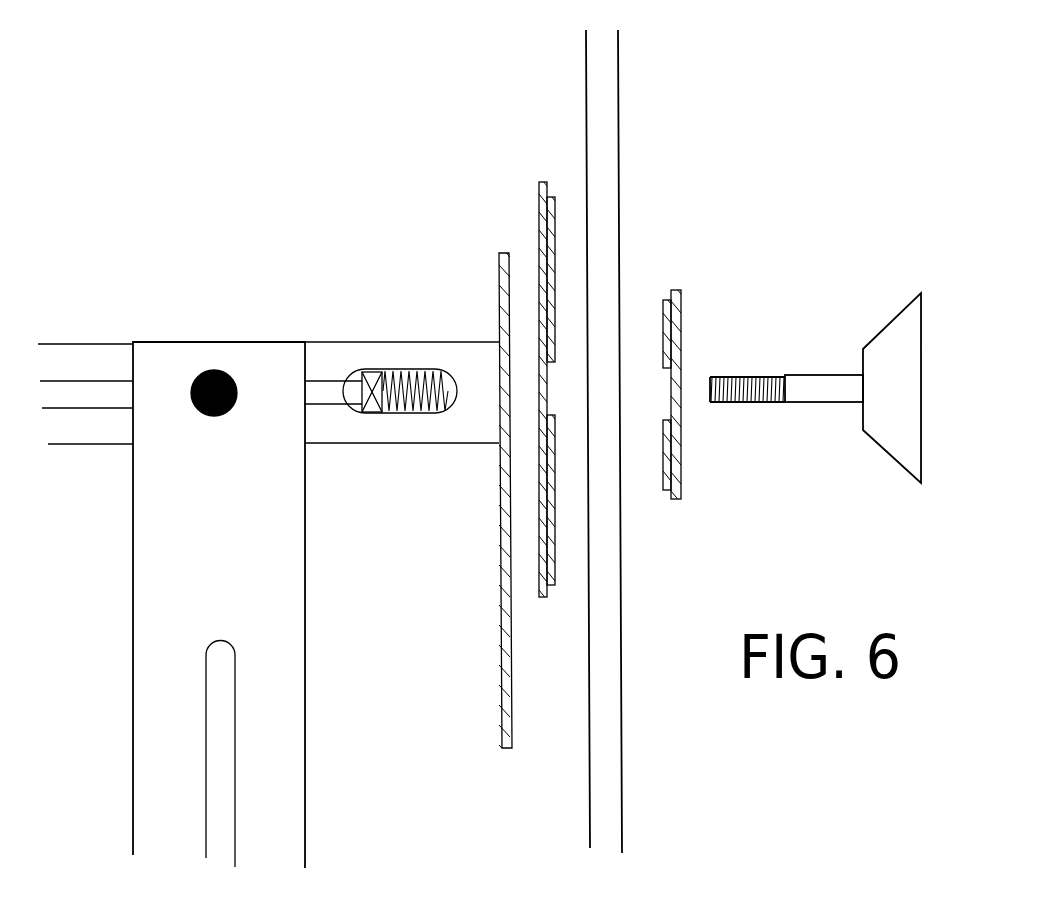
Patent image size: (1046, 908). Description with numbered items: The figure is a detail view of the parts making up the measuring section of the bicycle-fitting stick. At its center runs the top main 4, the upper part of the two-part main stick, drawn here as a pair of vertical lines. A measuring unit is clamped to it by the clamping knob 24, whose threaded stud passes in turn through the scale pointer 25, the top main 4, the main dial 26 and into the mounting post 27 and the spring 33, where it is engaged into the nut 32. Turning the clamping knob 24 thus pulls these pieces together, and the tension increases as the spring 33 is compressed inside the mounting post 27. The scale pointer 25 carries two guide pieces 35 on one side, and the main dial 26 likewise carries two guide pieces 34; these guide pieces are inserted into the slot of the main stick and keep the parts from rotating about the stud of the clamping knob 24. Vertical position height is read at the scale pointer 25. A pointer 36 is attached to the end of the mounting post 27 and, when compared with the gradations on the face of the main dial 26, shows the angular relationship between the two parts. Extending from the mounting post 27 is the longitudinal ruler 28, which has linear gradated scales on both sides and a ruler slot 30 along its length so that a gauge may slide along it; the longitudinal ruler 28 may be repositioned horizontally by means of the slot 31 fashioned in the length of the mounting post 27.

The top main 4 is at (602, 75).
The clamping knob 24 is at (758, 375).
The scale pointer 25 is at (680, 295).
The main dial 26 is at (539, 210).
The mounting post 27 is at (402, 432).
The longitudinal ruler 28 is at (228, 588).
The ruler slot 30 is at (220, 703).
The slot 31 is at (119, 389).
The nut 32 is at (372, 378).
The spring 33 is at (425, 372).
The guide pieces 34 is at (555, 267).
The guide pieces 35 is at (662, 460).
The pointer 36 is at (503, 733).